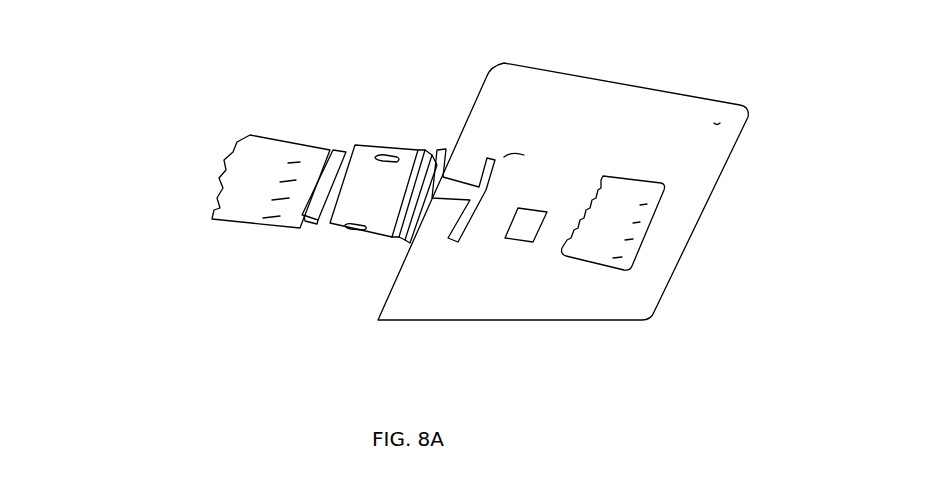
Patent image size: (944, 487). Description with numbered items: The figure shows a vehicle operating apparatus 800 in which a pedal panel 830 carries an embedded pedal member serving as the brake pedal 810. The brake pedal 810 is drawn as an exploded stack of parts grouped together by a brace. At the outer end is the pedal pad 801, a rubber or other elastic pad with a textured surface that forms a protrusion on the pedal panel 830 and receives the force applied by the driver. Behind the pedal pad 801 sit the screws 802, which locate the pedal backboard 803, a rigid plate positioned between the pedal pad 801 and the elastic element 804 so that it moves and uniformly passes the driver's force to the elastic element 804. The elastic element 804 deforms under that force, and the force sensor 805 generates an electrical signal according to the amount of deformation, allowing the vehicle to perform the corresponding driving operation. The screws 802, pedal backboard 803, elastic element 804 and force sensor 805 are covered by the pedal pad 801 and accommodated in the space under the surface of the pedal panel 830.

The vehicle operating apparatus 800 is at (720, 44).
The pedal panel 830 is at (478, 82).
The pedal pad 801 is at (212, 219).
The screws 802 is at (309, 220).
The pedal backboard 803 is at (334, 225).
The elastic element 804 is at (403, 238).
The force sensor 805 is at (522, 241).
The brake pedal 810 is at (128, 218).